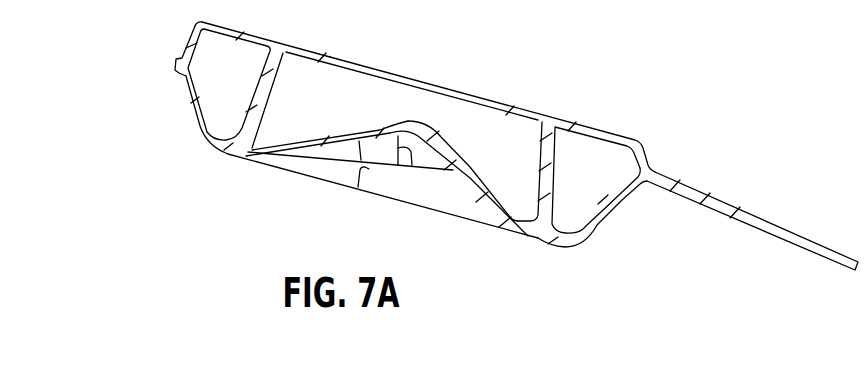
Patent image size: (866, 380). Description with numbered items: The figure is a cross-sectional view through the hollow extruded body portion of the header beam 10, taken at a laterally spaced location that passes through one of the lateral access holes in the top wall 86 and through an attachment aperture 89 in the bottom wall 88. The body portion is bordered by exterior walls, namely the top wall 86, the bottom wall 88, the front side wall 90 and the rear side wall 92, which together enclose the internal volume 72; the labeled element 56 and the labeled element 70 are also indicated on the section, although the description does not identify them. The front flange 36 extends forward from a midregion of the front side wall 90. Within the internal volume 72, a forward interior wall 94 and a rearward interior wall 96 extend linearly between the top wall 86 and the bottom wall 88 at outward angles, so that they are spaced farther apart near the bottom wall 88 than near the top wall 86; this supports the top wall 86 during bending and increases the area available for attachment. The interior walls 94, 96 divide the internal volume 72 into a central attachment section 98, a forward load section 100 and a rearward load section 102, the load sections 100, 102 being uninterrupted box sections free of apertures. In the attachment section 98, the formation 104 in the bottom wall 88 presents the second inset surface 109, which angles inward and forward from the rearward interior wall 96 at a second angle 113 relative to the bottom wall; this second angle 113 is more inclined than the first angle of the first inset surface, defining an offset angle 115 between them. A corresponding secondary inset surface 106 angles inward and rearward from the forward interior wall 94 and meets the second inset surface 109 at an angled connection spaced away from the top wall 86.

The header beam 10 is at (617, 78).
The front flange 36 is at (717, 207).
The bottom wall 56 is at (528, 238).
The top wall 70 is at (388, 70).
The internal volume 72 is at (462, 133).
The top wall 86 is at (298, 44).
The bottom wall 88 is at (226, 158).
The attachment apertures 89 is at (333, 147).
The front side wall 90 is at (623, 190).
The rear side wall 92 is at (180, 78).
The forward interior wall 94 is at (557, 148).
The rearward interior wall 96 is at (240, 112).
The central attachment section 98 is at (303, 113).
The forward load section 100 is at (570, 187).
The rearward load section 102 is at (215, 85).
The formation 104 is at (433, 182).
The secondary inset surface 106 is at (478, 199).
The second inset surface 109 is at (311, 150).
The second angle 113 is at (360, 185).
The offset angle 115 is at (398, 167).